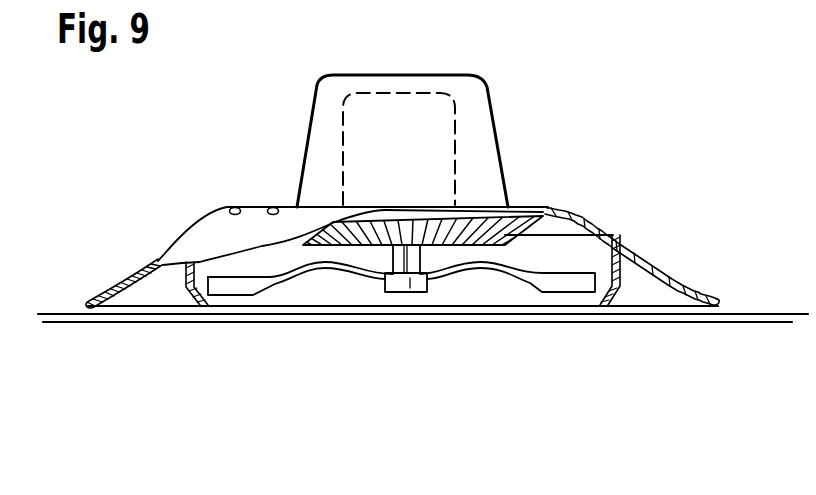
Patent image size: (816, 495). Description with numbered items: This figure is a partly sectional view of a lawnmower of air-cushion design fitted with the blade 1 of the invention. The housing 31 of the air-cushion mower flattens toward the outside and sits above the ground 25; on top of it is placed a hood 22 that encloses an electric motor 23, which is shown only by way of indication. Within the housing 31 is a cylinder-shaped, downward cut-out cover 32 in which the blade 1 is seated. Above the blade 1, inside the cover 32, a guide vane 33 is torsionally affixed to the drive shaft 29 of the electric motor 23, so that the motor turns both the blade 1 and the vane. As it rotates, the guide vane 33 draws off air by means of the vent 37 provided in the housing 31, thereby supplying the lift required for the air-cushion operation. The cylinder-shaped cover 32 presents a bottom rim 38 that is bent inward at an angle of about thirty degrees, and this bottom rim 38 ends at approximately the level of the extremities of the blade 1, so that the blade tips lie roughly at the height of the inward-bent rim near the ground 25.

The blade 1 is at (327, 284).
The hood 22 is at (488, 88).
The electric motor 23 is at (455, 140).
The ground 25 is at (64, 318).
The drive shaft 29 is at (430, 262).
The housing 31 is at (150, 246).
The cover 32 is at (620, 273).
The guide vane 33 is at (465, 226).
The vent 37 is at (272, 206).
The bottom rim 38 is at (603, 295).